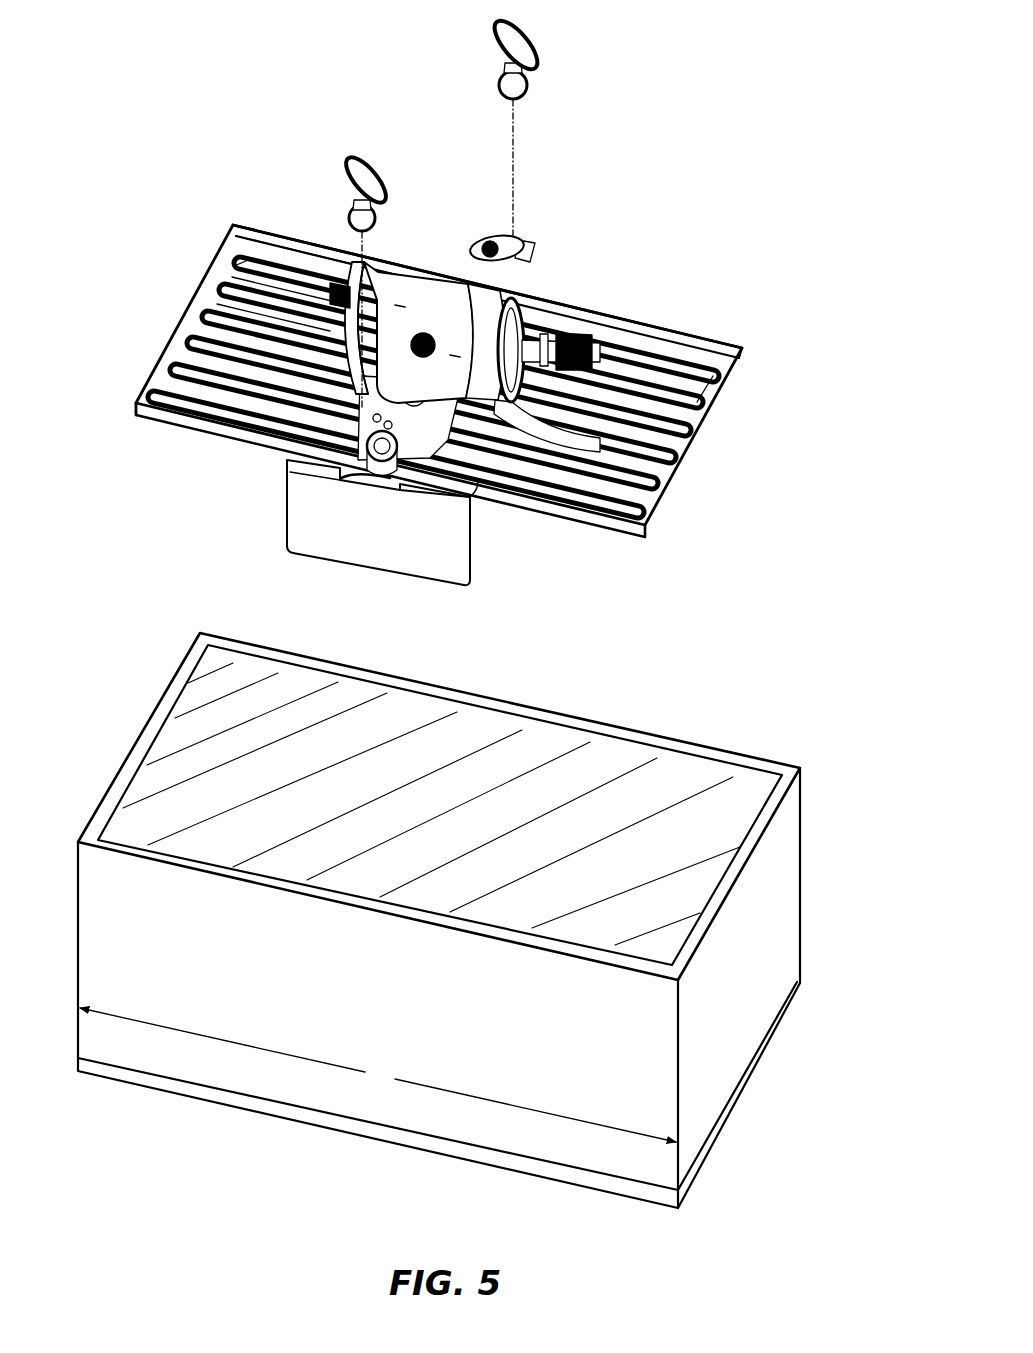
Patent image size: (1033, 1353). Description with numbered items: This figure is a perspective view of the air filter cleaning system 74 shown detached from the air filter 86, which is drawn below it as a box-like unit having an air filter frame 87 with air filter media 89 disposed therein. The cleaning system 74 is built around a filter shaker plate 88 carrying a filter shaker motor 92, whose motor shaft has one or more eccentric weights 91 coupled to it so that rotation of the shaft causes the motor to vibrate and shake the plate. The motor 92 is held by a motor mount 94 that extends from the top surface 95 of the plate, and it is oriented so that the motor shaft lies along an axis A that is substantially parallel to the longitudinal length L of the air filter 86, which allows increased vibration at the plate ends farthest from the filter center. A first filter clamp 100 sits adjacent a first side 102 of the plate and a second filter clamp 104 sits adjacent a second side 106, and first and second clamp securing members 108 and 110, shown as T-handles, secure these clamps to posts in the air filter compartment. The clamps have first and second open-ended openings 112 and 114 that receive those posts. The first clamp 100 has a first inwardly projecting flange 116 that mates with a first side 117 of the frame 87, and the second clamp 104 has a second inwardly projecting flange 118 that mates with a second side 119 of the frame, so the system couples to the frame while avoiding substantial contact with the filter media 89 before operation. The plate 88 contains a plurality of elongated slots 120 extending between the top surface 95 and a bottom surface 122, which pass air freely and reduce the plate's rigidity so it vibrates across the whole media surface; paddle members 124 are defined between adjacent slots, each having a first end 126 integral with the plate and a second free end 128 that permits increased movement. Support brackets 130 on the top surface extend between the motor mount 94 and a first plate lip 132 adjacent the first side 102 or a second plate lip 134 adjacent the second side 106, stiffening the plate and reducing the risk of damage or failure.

The air filter cleaning system 74 is at (680, 140).
The air filter 86 is at (730, 703).
The air filter frame 87 is at (786, 892).
The filter shaker plate 88 is at (463, 381).
The air filter media 89 is at (610, 750).
The eccentric weight 91 is at (330, 268).
The filter shaker motor 92 is at (382, 277).
The motor mount 94 is at (452, 387).
The top surface 95 is at (743, 356).
The first filter clamp 100 is at (313, 540).
The first side 102 is at (192, 432).
The second filter clamp 104 is at (503, 236).
The second side 106 is at (262, 222).
The first clamp securing member 108 is at (360, 172).
The second clamp securing member 110 is at (510, 35).
The first opening 112 is at (398, 523).
The second opening 114 is at (546, 242).
The first inwardly projecting flange 116 is at (470, 498).
The first side of the air filter frame 117 is at (368, 910).
The second inwardly projecting flange 118 is at (597, 300).
The second side of the air filter frame 119 is at (480, 693).
The elongated slots 120 is at (228, 338).
The bottom surface 122 is at (712, 422).
The paddle members 124 is at (275, 348).
The first end 126 is at (157, 390).
The second free end 128 is at (340, 365).
The support brackets 130 is at (378, 262).
The first plate lip 132 is at (135, 400).
The second plate lip 134 is at (292, 233).
The axis A is at (405, 325).
The longitudinal length L is at (378, 1075).